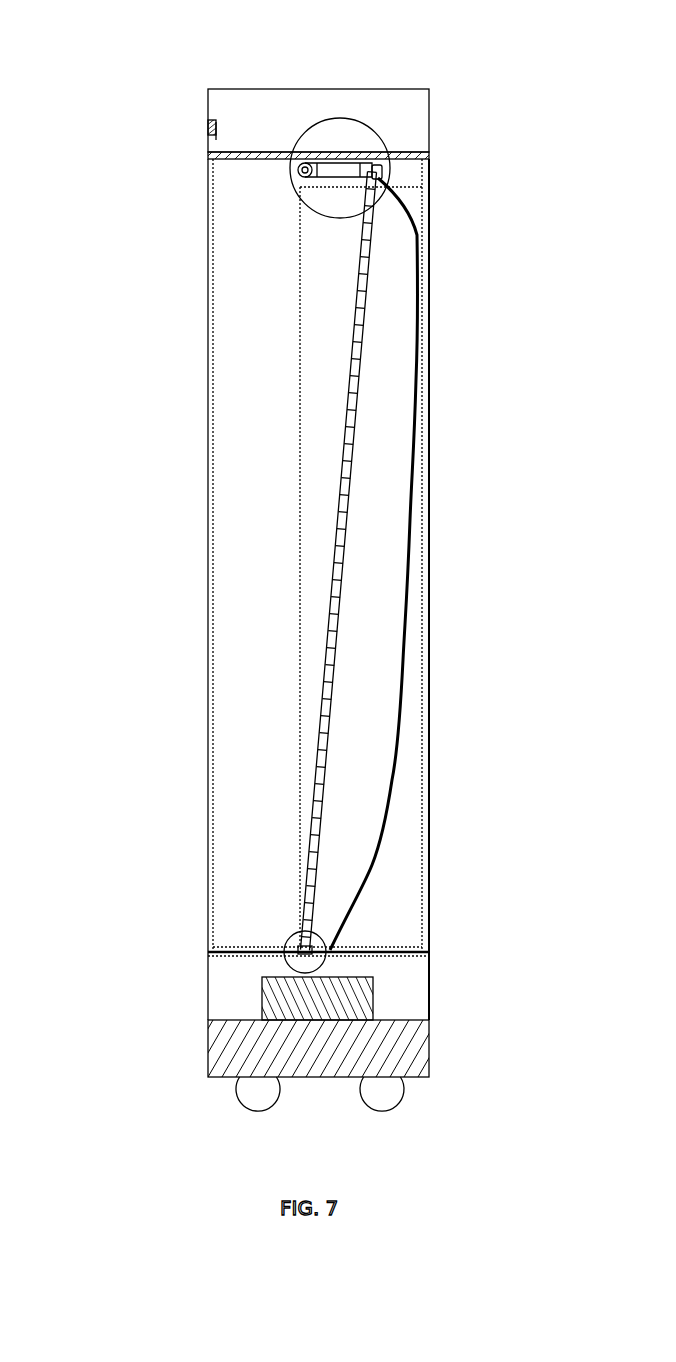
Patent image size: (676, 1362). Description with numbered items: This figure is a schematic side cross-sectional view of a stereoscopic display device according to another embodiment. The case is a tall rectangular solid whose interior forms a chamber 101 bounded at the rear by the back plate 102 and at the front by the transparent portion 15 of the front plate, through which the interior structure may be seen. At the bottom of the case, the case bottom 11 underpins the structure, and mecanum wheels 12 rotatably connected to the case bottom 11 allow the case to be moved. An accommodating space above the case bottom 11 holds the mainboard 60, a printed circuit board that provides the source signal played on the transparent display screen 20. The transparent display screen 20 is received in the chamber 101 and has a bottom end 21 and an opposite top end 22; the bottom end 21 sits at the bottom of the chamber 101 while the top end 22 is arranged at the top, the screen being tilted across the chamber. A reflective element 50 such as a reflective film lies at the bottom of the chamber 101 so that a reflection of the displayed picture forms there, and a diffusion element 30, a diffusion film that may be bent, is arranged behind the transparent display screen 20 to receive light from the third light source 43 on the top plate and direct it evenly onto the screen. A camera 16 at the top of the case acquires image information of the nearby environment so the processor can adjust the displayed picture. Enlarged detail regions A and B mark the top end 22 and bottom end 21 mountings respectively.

The case bottom 11 is at (408, 1052).
The mecanum wheels 12 is at (384, 1095).
The transparent portion 15 is at (212, 558).
The camera 16 is at (208, 125).
The transparent display screen 20 is at (350, 485).
The bottom end 21 is at (300, 945).
The top end 22 is at (378, 180).
The diffusion element 30 is at (405, 617).
The third light source 43 is at (268, 152).
The reflective element 50 is at (253, 948).
The mainboard 60 is at (340, 1003).
The chamber 101 is at (245, 392).
The back plate 102 is at (430, 712).
The detail region A is at (362, 121).
The detail region B is at (290, 966).